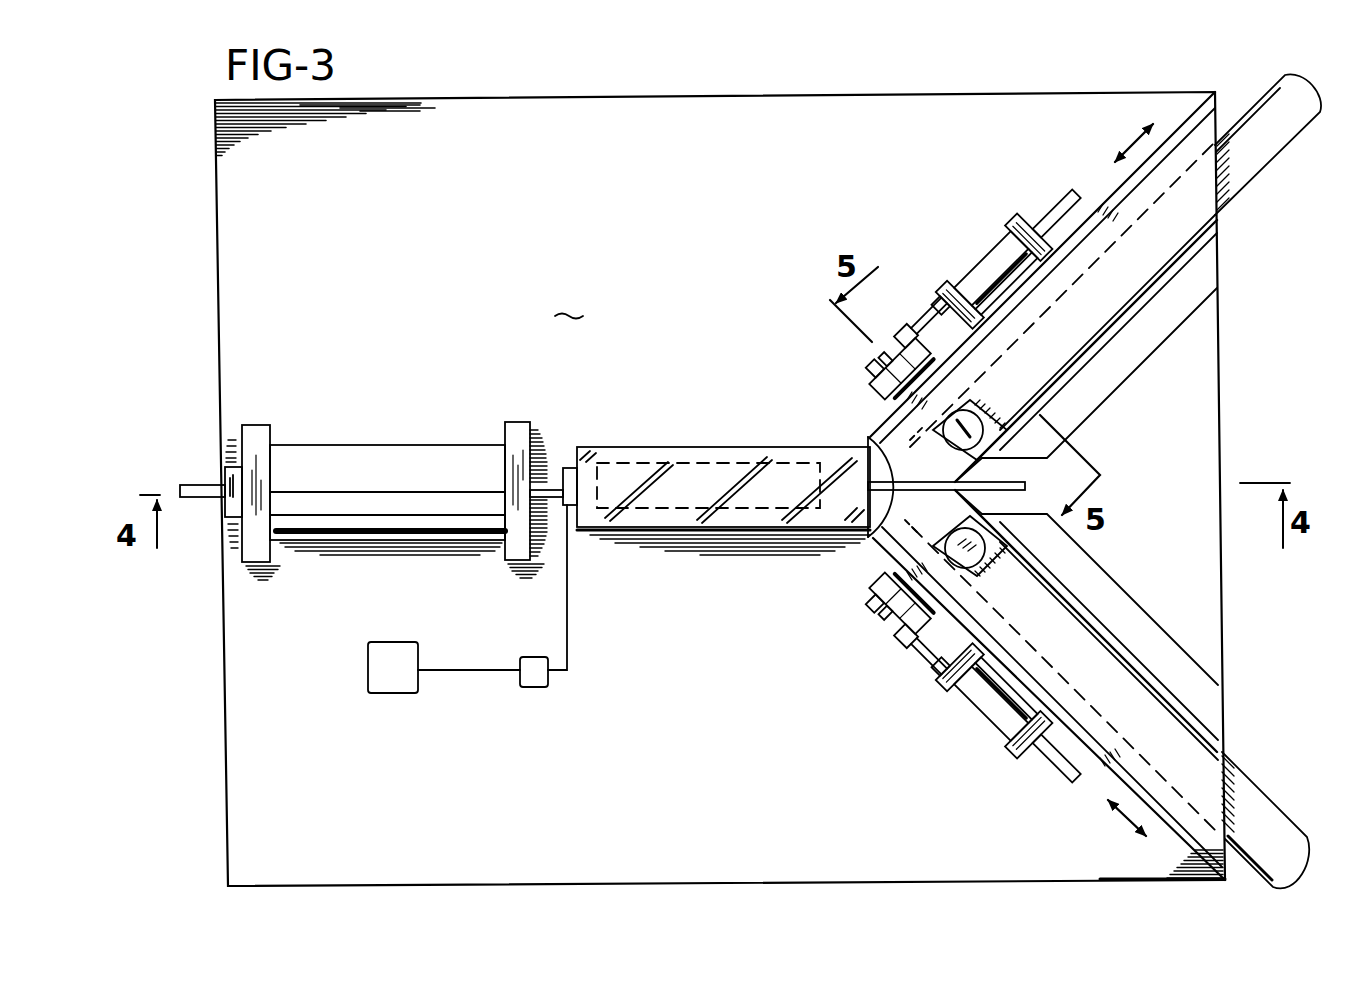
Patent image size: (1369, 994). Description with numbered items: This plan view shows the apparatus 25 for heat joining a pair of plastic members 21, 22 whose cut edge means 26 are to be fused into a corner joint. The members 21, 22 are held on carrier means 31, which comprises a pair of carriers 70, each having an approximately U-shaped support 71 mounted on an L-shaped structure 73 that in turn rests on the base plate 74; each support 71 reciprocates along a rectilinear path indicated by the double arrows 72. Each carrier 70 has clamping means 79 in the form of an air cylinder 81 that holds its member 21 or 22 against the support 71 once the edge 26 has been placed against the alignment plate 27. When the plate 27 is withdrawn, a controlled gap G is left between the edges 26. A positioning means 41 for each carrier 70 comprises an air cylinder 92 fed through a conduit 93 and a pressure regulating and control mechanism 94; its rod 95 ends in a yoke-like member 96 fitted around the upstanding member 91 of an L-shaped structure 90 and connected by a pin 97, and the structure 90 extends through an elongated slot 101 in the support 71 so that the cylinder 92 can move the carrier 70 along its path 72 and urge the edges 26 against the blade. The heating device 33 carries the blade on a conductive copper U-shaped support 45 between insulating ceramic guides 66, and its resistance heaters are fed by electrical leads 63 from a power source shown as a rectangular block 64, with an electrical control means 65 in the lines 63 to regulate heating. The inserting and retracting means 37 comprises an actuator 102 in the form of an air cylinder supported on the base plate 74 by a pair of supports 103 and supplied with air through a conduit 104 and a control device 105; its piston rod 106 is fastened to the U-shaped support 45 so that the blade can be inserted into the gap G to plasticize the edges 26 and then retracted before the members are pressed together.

The member 21 is at (1294, 135).
The member 22 is at (1262, 792).
The apparatus 25 is at (780, 378).
The edge means 26 is at (870, 437).
The alignment plate 27 is at (1025, 483).
The carrier means 31 is at (1152, 438).
The heating device 33 is at (723, 462).
The inserting and retracting means 37 is at (340, 440).
The positioning means 41 is at (947, 480).
The U-shaped support 45 is at (693, 463).
The electrical leads 63 is at (567, 617).
The source of electrical power 64 is at (392, 642).
The electrical control means 65 is at (530, 657).
The supporting guides 66 is at (640, 452).
The carrier 70 is at (1226, 108).
The U-shaped support 71 is at (1212, 236).
The rectilinear path 72 is at (1130, 143).
The L-shaped structure 73 is at (1193, 120).
The base plate 74 is at (570, 303).
The clamping means 79 is at (992, 405).
The air cylinder 81 is at (945, 447).
The L-shaped structure 90 is at (873, 404).
The upstanding member 91 is at (918, 330).
The air cylinder 92 is at (998, 247).
The conduit 93 is at (1060, 197).
The pressure regulating and control mechanism 94 is at (1030, 213).
The rod 95 is at (938, 312).
The yoke-like member 96 is at (872, 370).
The pin 97 is at (883, 360).
The elongated slots 101 is at (977, 352).
The actuator 102 is at (380, 445).
The supports 103 is at (260, 423).
The conduit 104 is at (198, 487).
The control device 105 is at (240, 478).
The piston rod 106 is at (556, 468).
The gap G is at (1021, 496).